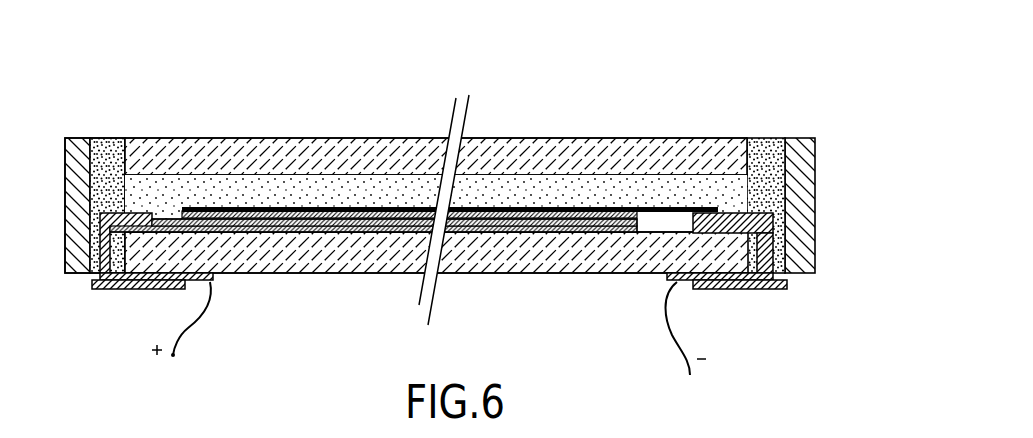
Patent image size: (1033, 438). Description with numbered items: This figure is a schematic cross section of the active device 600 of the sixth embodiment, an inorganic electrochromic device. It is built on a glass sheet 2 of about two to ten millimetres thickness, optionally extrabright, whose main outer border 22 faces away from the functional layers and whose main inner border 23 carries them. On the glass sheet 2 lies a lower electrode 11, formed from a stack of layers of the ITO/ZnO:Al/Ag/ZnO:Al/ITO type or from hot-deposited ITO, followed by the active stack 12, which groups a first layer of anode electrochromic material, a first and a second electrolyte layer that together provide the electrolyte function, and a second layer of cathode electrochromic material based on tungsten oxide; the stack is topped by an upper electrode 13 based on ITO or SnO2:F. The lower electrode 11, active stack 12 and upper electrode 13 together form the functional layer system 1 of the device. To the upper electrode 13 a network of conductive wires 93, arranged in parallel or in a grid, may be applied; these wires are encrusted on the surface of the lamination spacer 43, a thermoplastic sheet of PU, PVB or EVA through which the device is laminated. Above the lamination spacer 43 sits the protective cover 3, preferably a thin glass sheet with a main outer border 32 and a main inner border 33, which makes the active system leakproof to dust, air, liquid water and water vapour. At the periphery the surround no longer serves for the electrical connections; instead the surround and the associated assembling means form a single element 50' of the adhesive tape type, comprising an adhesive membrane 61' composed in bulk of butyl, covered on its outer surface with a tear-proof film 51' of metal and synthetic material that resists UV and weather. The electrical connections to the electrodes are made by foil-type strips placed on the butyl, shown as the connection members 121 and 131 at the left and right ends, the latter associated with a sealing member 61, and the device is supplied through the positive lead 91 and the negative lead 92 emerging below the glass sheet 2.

The active device 600 is at (266, 117).
The single element of the adhesive tape type 50' is at (96, 149).
The tear-proof film 51' is at (454, 171).
The adhesive membrane 61' is at (439, 172).
The lamination spacer 43 is at (372, 192).
The protective cover 3 is at (512, 150).
The main outer border of the cover 32 is at (568, 140).
The main inner border of the cover 33 is at (608, 186).
The counter electrode contact 131 is at (765, 228).
The sealing/contact member 61 is at (772, 261).
The electrode contact 121 is at (110, 276).
The lower electrode 11 is at (268, 228).
The active stack 12 is at (314, 220).
The upper electrode 13 is at (365, 212).
The electrochromic layer stack 1 is at (375, 328).
The network of conductive wires 93 is at (482, 232).
The glass sheet 2 is at (509, 255).
The main outer border of the glass sheet 22 is at (540, 273).
The main inner border of the glass sheet 23 is at (598, 234).
The positive lead wire 91 is at (195, 337).
The negative lead wire 92 is at (668, 335).